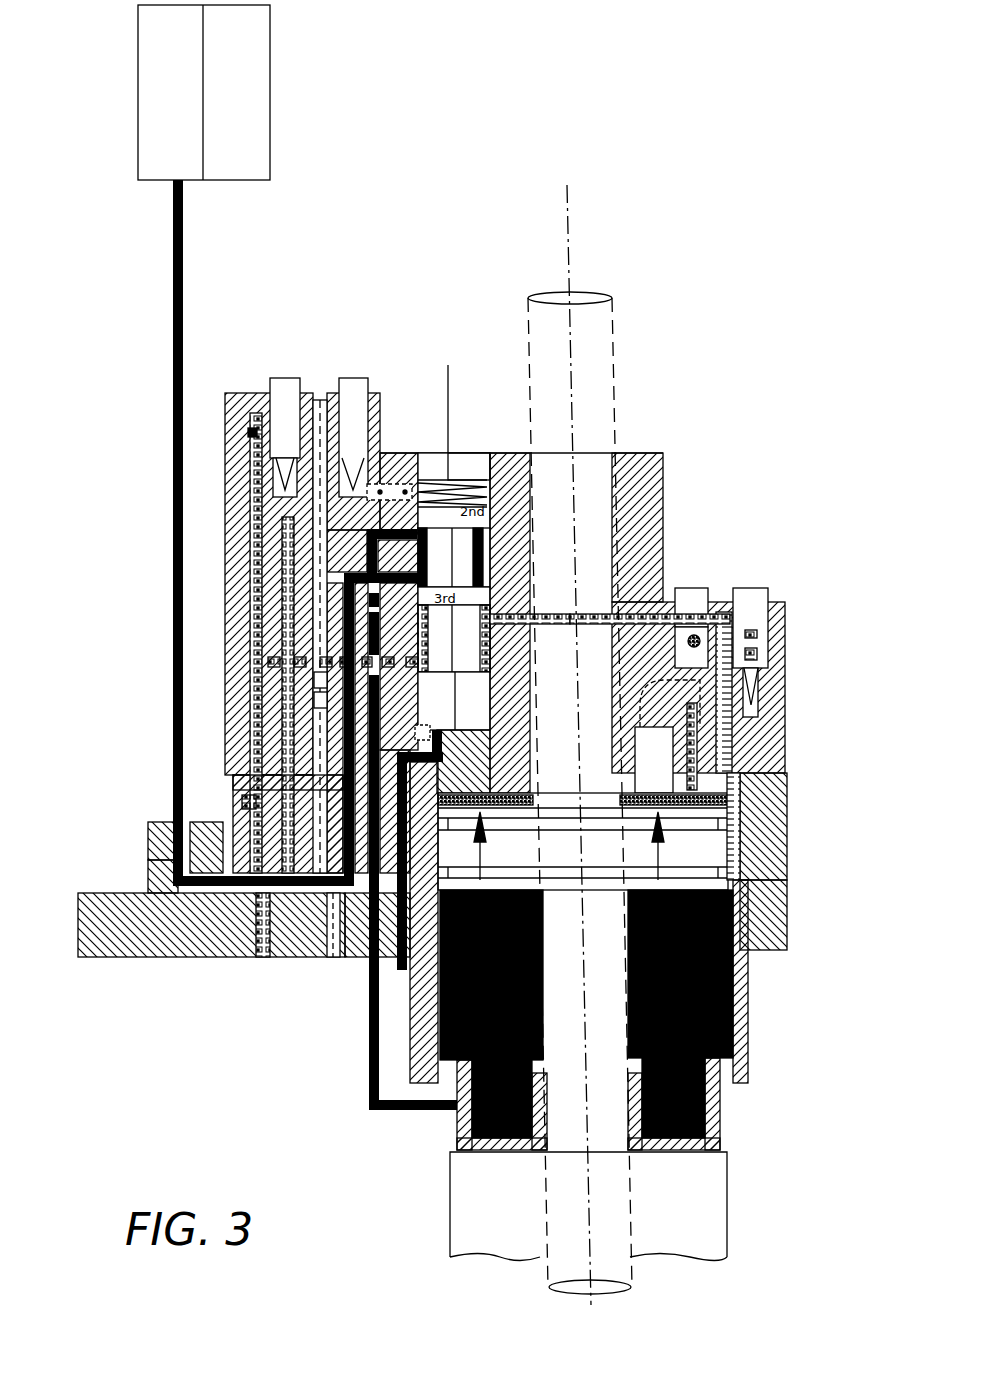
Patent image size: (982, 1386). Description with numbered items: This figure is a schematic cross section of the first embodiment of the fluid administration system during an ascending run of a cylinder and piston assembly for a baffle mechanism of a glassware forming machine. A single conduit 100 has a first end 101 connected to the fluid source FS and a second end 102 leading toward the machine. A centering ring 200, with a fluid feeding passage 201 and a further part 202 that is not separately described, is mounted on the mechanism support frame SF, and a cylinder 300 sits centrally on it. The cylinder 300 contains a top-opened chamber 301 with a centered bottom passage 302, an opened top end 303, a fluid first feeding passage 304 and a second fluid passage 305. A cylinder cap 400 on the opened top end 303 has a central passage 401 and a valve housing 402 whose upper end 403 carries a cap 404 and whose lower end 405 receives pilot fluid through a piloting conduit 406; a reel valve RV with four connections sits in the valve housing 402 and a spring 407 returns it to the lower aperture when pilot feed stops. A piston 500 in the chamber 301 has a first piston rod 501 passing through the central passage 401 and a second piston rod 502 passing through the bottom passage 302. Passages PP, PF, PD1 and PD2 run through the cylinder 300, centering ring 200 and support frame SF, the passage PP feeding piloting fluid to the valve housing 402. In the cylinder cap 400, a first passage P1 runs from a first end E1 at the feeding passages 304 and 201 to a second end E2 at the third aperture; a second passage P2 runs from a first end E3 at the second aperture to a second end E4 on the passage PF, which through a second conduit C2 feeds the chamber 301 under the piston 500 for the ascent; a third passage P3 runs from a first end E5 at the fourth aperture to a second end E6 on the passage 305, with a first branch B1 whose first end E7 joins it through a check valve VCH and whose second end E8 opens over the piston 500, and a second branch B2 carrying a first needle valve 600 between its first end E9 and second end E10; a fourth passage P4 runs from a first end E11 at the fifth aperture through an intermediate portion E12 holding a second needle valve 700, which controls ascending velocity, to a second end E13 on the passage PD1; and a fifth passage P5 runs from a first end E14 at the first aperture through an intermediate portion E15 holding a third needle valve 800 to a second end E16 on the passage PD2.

The fluid source FS is at (270, 95).
The single conduit 100 is at (184, 258).
The first end 101 is at (184, 200).
The second end 102 is at (180, 765).
The centering ring 200 is at (148, 832).
The fluid feeding passage 201 is at (168, 858).
The base block side part 202 is at (180, 815).
The cylinder 300 is at (750, 1038).
The top-opened chamber 301 is at (750, 990).
The centered bottom passage 302 is at (627, 1120).
The opened top end 303 is at (760, 885).
The fluid first feeding passage 304 is at (420, 855).
The second fluid passage 305 is at (760, 825).
The cylinder cap 400 is at (770, 728).
The central passage 401 is at (640, 763).
The valve housing 402 is at (500, 705).
The upper end 403 is at (423, 483).
The cap 404 is at (468, 470).
The lower end 405 is at (454, 701).
The piloting conduit 406 is at (463, 752).
The spring 407 is at (487, 490).
The piston 500 is at (583, 841).
The first piston rod 501 is at (612, 383).
The second piston rod 502 is at (632, 1223).
The first needle valve 600 is at (755, 590).
The second needle valve 700 is at (283, 378).
The third needle valve 800 is at (358, 378).
The first branch B1 is at (675, 690).
The second branch B2 is at (757, 655).
The second conduit C2 is at (370, 1067).
The first end E1 is at (330, 740).
The second end E2 is at (450, 557).
The first end E3 is at (417, 518).
The second end E4 is at (422, 730).
The first end E5 is at (515, 620).
The second end E6 is at (724, 740).
The first end E7 is at (677, 640).
The second end E8 is at (655, 792).
The first end E9 is at (757, 638).
The second end E10 is at (735, 773).
The first end E11 is at (400, 658).
The intermediate portion E12 is at (287, 441).
The second end E13 is at (330, 775).
The first end E14 is at (385, 490).
The intermediate portion E15 is at (325, 405).
The second end E16 is at (250, 800).
The first passage P1 is at (330, 680).
The second passage P2 is at (330, 700).
The third passage P3 is at (580, 620).
The fourth passage P4 is at (288, 548).
The fifth passage P5 is at (325, 513).
The passage PD1 is at (262, 940).
The passage PD2 is at (335, 938).
The passage PF is at (375, 938).
The passage PP is at (405, 975).
The reel valve RV is at (490, 556).
The mechanism support frame SF is at (100, 935).
The valve chamber VCH is at (691, 600).